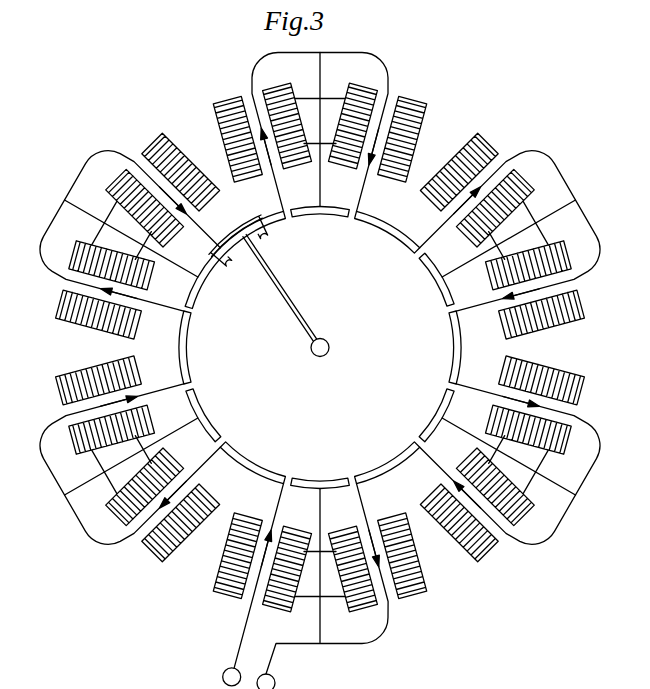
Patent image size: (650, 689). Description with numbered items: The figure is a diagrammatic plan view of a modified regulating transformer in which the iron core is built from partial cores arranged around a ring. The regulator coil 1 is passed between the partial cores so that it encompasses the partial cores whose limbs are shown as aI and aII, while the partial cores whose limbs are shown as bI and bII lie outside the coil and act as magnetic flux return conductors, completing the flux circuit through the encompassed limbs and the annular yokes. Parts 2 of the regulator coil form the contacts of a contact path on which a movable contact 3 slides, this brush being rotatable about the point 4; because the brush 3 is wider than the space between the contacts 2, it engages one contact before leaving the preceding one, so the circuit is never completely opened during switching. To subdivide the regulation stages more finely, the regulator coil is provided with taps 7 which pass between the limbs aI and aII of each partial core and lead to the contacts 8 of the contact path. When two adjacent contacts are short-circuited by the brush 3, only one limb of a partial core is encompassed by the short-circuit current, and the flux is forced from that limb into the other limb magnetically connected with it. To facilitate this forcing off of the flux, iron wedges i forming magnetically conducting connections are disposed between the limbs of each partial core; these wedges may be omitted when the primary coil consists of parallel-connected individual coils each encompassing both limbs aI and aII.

The regulator coil 1 is at (551, 166).
The parts of the regulator coil forming contacts 2 is at (246, 462).
The movable contact 3 is at (275, 243).
The point of rotation 4 is at (328, 353).
The taps 7 is at (133, 349).
The contacts 8 is at (198, 421).
The iron wedges i is at (113, 458).
The first limb of a partial core aI is at (130, 186).
The second limb of a partial core aII is at (87, 250).
The first magnetic flux return conductor limb bI is at (163, 143).
The second magnetic flux return conductor limb bII is at (79, 313).